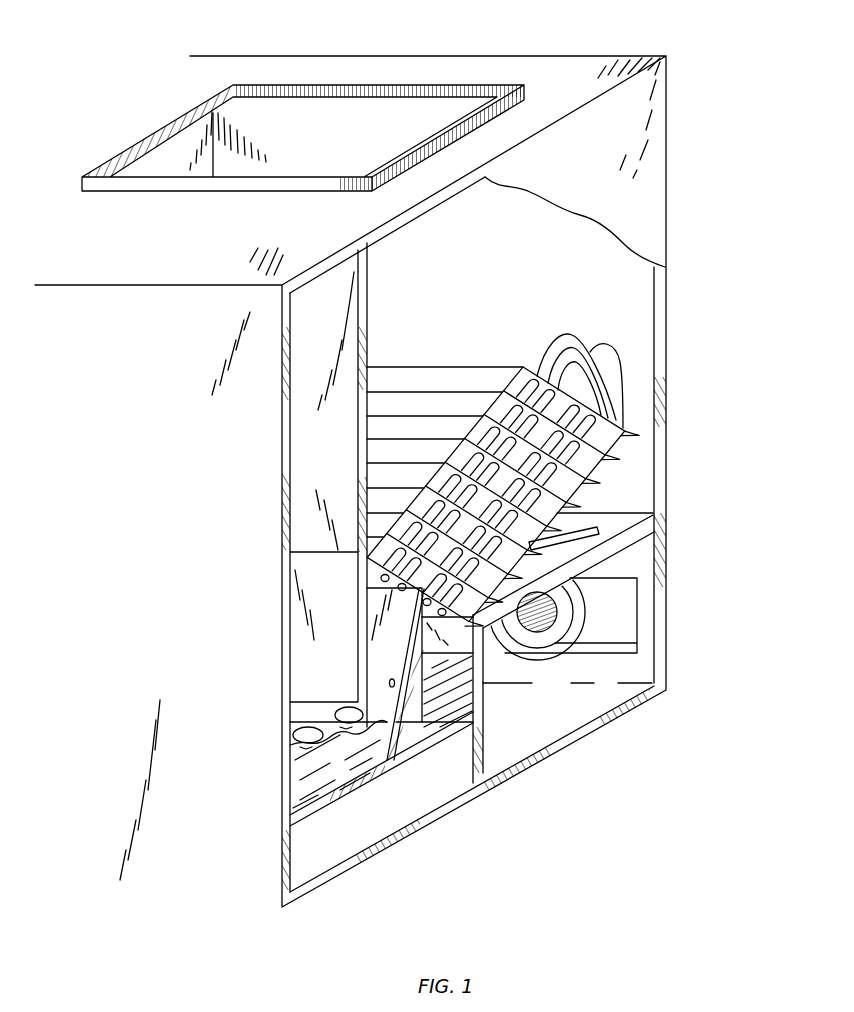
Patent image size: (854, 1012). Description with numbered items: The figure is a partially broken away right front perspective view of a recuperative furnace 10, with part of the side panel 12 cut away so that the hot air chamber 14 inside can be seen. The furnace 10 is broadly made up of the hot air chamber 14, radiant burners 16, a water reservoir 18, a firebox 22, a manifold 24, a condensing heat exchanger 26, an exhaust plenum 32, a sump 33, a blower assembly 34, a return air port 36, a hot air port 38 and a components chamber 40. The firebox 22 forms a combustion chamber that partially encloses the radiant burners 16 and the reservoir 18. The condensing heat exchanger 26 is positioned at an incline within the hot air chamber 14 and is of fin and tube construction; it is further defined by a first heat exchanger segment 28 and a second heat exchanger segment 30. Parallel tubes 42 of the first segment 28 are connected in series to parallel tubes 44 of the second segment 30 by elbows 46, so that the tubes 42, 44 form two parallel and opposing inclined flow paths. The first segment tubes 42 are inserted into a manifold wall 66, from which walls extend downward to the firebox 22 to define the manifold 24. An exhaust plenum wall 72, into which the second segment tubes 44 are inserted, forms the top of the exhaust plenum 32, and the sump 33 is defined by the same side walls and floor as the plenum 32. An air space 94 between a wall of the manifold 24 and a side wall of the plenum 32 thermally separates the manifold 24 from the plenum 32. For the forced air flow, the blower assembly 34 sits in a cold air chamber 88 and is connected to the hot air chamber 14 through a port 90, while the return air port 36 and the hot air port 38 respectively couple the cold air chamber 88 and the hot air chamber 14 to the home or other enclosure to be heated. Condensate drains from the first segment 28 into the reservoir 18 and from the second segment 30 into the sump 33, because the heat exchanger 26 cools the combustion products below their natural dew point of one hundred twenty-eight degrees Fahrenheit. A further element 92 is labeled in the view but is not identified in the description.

The recuperative furnace 10 is at (678, 212).
The side panel 12 is at (659, 128).
The hot air chamber 14 is at (632, 311).
The radiant burners 16 is at (298, 710).
The water reservoir 18 is at (325, 784).
The firebox 22 is at (301, 765).
The manifold 24 is at (381, 641).
The condensing heat exchanger 26 is at (619, 473).
The first heat exchanger segment 28 is at (463, 425).
The second heat exchanger segment 30 is at (580, 490).
The exhaust plenum 32 is at (447, 642).
The sump 33 is at (439, 718).
The blower assembly 34 is at (543, 642).
The return air port 36 is at (627, 605).
The hot air port 38 is at (368, 113).
The components chamber 40 is at (316, 443).
The parallel tubes of first segment 42 is at (509, 383).
The parallel tubes of second segment 44 is at (609, 445).
The elbows 46 is at (620, 367).
The manifold wall 66 is at (373, 573).
The exhaust plenum wall 72 is at (458, 620).
The cold air chamber 88 is at (609, 688).
The port 90 is at (548, 543).
The baffle plate 92 is at (407, 732).
The air space 94 is at (370, 783).